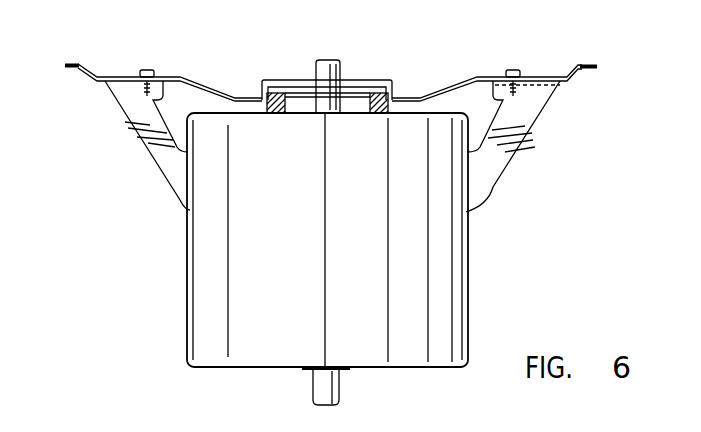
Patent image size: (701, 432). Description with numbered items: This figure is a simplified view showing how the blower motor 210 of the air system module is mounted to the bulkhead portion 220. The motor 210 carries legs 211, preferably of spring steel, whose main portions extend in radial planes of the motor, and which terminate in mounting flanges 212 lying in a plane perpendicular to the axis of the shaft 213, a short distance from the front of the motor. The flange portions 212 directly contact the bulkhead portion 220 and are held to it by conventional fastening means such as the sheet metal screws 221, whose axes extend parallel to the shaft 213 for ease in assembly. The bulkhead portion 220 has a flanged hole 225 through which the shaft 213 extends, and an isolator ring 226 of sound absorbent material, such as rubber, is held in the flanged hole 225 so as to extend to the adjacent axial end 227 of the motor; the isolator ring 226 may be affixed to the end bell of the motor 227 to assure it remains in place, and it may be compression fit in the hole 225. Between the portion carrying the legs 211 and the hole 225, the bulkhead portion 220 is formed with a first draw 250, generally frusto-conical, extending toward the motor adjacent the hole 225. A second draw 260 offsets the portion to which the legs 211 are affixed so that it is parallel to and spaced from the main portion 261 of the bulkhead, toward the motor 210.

The blower motor 210 is at (200, 271).
The legs 211 is at (150, 157).
The mounting flanges 212 is at (128, 82).
The shaft 213 is at (325, 60).
The bulkhead portion 220 is at (481, 77).
The sheet metal screws 221 is at (153, 72).
The flanged hole 225 is at (377, 81).
The isolator ring 226 is at (277, 113).
The axial end of the motor 227 is at (307, 113).
The first draw 250 is at (423, 97).
The second draw 260 is at (570, 63).
The main portion 261 is at (78, 62).